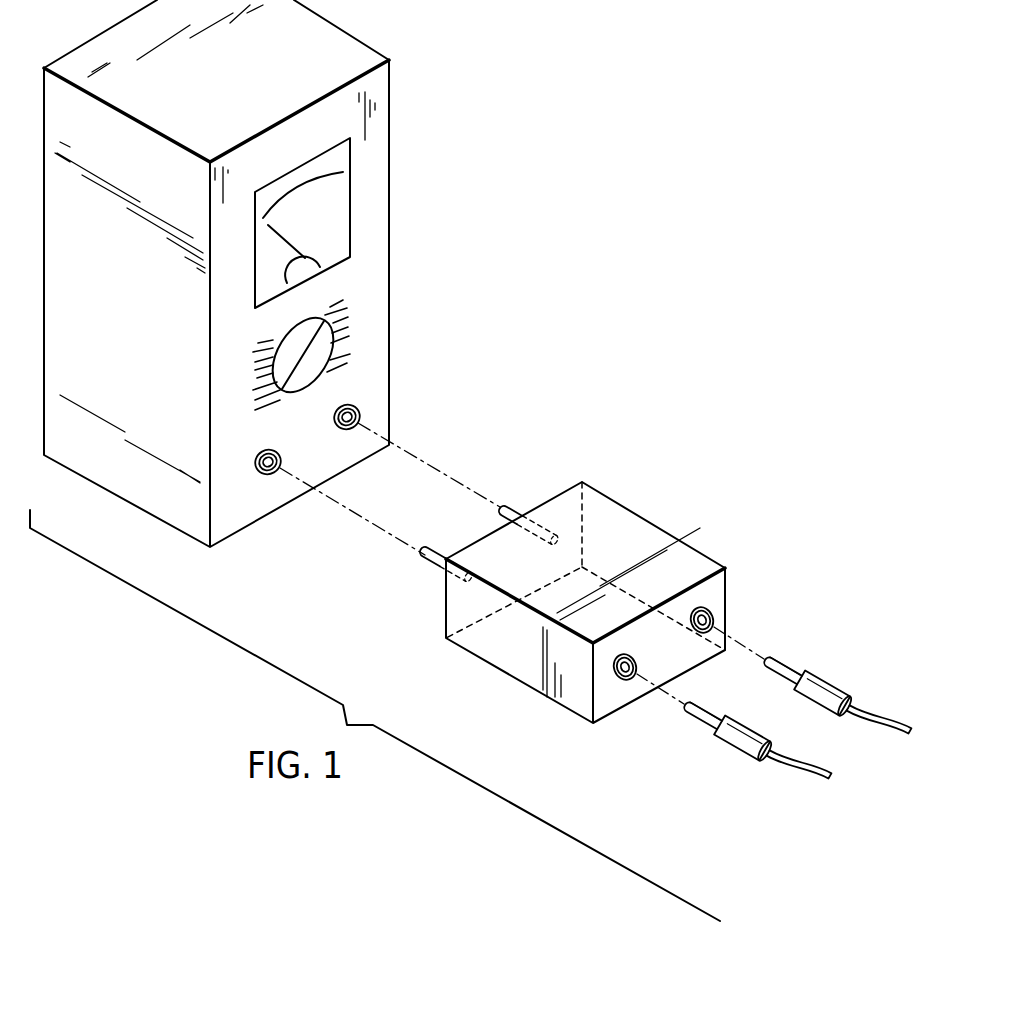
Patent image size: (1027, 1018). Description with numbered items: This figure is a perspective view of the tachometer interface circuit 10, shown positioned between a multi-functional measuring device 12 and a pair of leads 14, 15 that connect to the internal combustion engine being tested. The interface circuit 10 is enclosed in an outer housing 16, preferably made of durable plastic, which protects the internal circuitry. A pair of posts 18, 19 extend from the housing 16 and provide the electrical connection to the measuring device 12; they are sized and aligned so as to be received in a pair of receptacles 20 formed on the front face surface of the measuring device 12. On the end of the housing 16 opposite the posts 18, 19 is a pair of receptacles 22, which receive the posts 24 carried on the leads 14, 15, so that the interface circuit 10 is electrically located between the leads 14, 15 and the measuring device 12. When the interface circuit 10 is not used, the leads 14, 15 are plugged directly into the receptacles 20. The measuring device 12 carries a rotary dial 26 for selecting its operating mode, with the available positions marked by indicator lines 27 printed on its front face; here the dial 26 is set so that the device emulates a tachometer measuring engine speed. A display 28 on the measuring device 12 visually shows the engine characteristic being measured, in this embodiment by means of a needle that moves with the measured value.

The tachometer interface circuit 10 is at (633, 497).
The multi-functional measuring device 12 is at (370, 253).
The lead 14 is at (827, 680).
The lead 15 is at (740, 747).
The outer housing 16 is at (703, 563).
The post 18 is at (435, 562).
The post 19 is at (513, 507).
The receptacles 20 is at (357, 410).
The receptacles 22 is at (714, 610).
The posts 24 is at (788, 660).
The rotary dial 26 is at (347, 340).
The indicator lines 27 is at (258, 354).
The display 28 is at (332, 207).